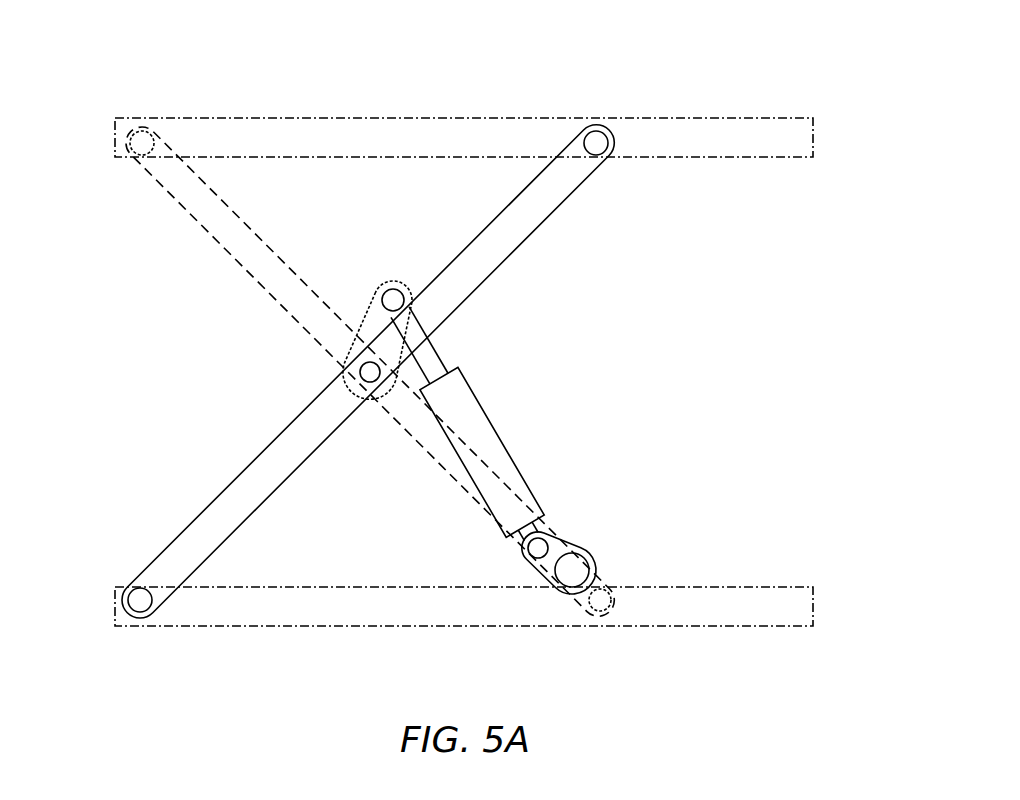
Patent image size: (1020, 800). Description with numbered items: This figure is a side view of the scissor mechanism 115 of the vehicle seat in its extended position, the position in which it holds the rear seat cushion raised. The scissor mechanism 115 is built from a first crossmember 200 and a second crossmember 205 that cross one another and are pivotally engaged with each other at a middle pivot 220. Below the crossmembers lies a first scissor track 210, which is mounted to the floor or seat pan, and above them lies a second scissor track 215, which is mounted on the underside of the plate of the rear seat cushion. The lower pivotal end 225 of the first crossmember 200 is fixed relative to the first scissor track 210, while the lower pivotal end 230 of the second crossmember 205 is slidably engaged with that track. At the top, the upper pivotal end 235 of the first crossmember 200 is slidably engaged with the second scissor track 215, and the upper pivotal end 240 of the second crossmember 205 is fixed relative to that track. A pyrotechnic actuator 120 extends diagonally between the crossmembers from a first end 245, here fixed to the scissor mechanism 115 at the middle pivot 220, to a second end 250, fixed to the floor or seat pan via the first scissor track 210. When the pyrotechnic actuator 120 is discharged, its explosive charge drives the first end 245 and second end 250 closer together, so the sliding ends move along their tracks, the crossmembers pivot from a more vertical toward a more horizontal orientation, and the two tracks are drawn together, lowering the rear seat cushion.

The scissor mechanism 115 is at (748, 48).
The pyrotechnic actuator 120 is at (487, 405).
The first crossmember 200 is at (233, 483).
The second crossmember 205 is at (231, 256).
The first scissor track 210 is at (292, 627).
The second scissor track 215 is at (316, 114).
The middle pivot 220 is at (341, 388).
The lower pivotal end of the first crossmember 225 is at (140, 619).
The lower pivotal end of the second crossmember 230 is at (601, 613).
The upper pivotal end of the first crossmember 235 is at (600, 128).
The upper pivotal end of the second crossmember 240 is at (141, 128).
The first end of the pyrotechnic actuator 245 is at (391, 286).
The second end of the pyrotechnic actuator 250 is at (586, 556).